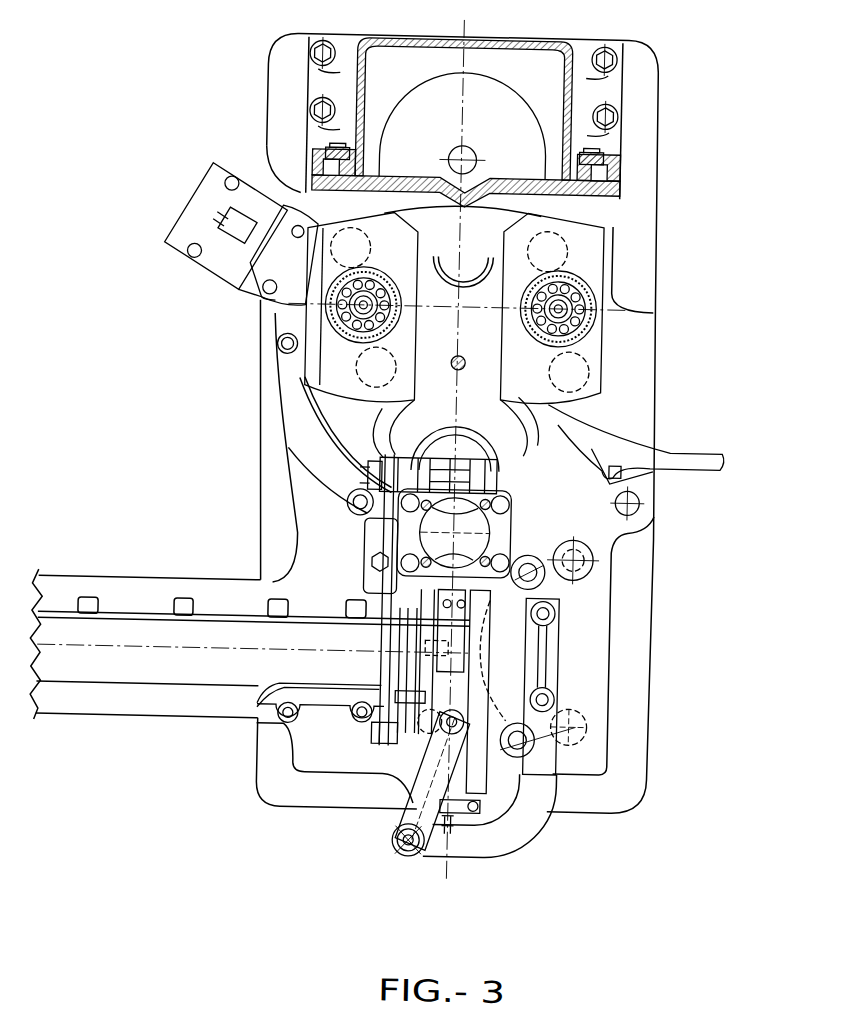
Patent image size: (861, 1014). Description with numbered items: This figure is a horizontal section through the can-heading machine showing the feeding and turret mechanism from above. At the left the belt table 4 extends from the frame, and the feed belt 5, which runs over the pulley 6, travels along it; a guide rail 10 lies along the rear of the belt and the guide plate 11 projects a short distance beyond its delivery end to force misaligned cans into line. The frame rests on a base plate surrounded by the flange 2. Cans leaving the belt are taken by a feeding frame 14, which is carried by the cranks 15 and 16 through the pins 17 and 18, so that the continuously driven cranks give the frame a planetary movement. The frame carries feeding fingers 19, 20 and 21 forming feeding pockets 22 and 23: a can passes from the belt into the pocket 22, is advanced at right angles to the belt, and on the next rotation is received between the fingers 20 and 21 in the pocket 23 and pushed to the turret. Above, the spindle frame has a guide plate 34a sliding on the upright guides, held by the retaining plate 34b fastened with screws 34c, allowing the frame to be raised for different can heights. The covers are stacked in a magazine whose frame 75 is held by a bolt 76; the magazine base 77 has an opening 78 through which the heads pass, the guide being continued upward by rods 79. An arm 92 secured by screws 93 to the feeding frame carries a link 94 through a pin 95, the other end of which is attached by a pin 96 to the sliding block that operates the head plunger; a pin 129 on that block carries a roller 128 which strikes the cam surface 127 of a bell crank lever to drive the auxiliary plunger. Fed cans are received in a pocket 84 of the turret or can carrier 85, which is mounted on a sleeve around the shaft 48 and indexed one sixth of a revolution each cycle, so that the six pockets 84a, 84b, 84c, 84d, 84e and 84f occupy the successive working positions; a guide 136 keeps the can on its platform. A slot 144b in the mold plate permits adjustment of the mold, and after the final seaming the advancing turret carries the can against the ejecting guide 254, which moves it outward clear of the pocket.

The flange 2 is at (571, 880).
The belt table 4 is at (158, 709).
The feed belt 5 is at (114, 673).
The pulley 6 is at (343, 312).
The guide rail 10 is at (224, 627).
The guide plate 11 is at (316, 692).
The feeding frame 14 is at (553, 630).
The crank 15 is at (580, 714).
The crank 16 is at (582, 546).
The pin 17 is at (520, 729).
The pin 18 is at (534, 554).
The feeding finger 19 is at (473, 641).
The feeding finger 20 is at (464, 560).
The feeding finger 21 is at (488, 492).
The feeding pocket 22 is at (492, 612).
The feeding pocket 23 is at (488, 509).
The guide plate 34a is at (590, 210).
The retaining plate 34b is at (600, 163).
The screws 34c is at (592, 148).
The shaft 48 is at (457, 355).
The magazine frame 75 is at (380, 549).
The bolt 76 is at (420, 558).
The magazine base 77 is at (414, 541).
The opening 78 is at (374, 572).
The rods 79 is at (491, 502).
The pocket 84 is at (467, 452).
The turret pocket at position a 84a is at (447, 455).
The turret pocket at position b 84b is at (400, 425).
The turret pocket at position c 84c is at (395, 340).
The turret pocket at position d 84d is at (441, 300).
The turret pocket at position e 84e is at (540, 350).
The turret pocket at position f 84f is at (532, 426).
The turret 85 is at (462, 197).
The arm 92 is at (506, 832).
The screws 93 is at (553, 696).
The link 94 is at (403, 841).
The pin 95 is at (415, 849).
The pin 96 is at (446, 740).
The cam surface 127 is at (410, 643).
The roller 128 is at (405, 692).
The pin 129 is at (461, 712).
The guide 136 is at (340, 452).
The slot 144b is at (252, 234).
The ejecting guide 254 is at (598, 430).